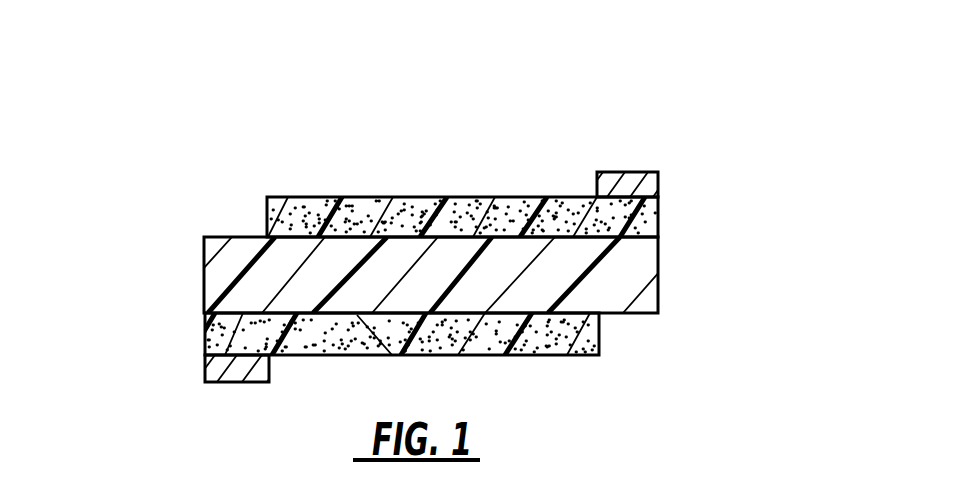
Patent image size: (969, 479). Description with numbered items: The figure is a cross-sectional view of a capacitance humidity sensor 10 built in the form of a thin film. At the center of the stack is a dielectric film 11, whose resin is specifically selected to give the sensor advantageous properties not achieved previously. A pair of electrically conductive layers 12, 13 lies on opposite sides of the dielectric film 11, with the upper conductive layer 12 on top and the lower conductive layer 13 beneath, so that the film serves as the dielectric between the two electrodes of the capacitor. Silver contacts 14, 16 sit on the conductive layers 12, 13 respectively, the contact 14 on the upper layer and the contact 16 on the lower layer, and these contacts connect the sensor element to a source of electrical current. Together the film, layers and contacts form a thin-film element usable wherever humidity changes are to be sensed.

The humidity sensor 10 is at (183, 233).
The dielectric film 11 is at (223, 268).
The electrically conductive layer 12 is at (362, 208).
The electrically conductive layer 13 is at (363, 343).
The silver contact 14 is at (632, 182).
The silver contact 16 is at (212, 365).